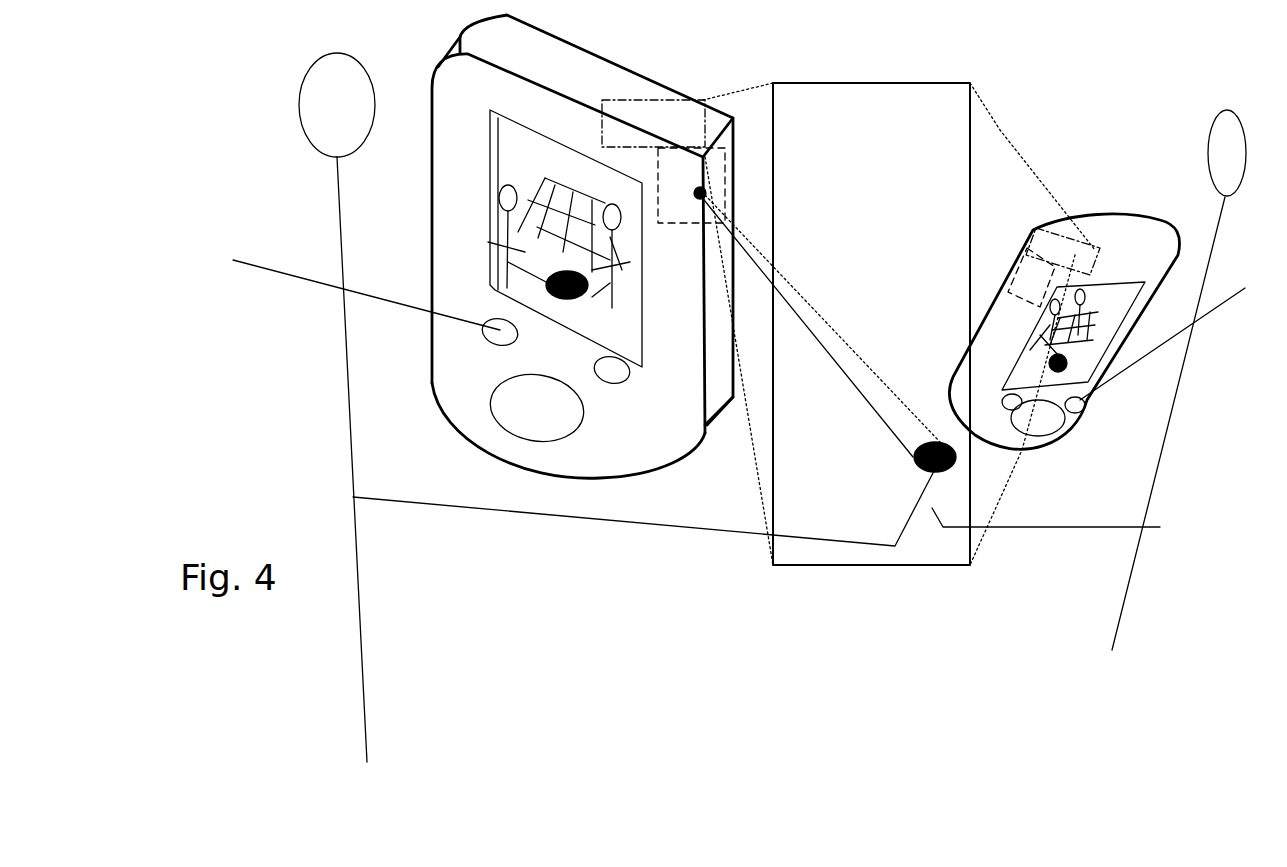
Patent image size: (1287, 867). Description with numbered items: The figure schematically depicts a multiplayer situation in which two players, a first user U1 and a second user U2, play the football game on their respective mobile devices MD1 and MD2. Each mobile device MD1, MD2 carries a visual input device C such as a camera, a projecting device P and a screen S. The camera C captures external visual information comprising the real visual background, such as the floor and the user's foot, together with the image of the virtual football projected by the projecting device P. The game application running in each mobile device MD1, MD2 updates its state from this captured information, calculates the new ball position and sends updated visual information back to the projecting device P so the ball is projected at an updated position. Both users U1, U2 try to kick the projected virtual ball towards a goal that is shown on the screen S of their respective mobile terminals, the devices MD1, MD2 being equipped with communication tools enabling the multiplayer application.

The mobile device MD1 is at (524, 477).
The mobile device MD2 is at (1157, 209).
The user U1 is at (366, 407).
The user U2 is at (1163, 394).
The screen S is at (780, 198).
The visual input device C is at (854, 199).
The projecting device P is at (884, 252).